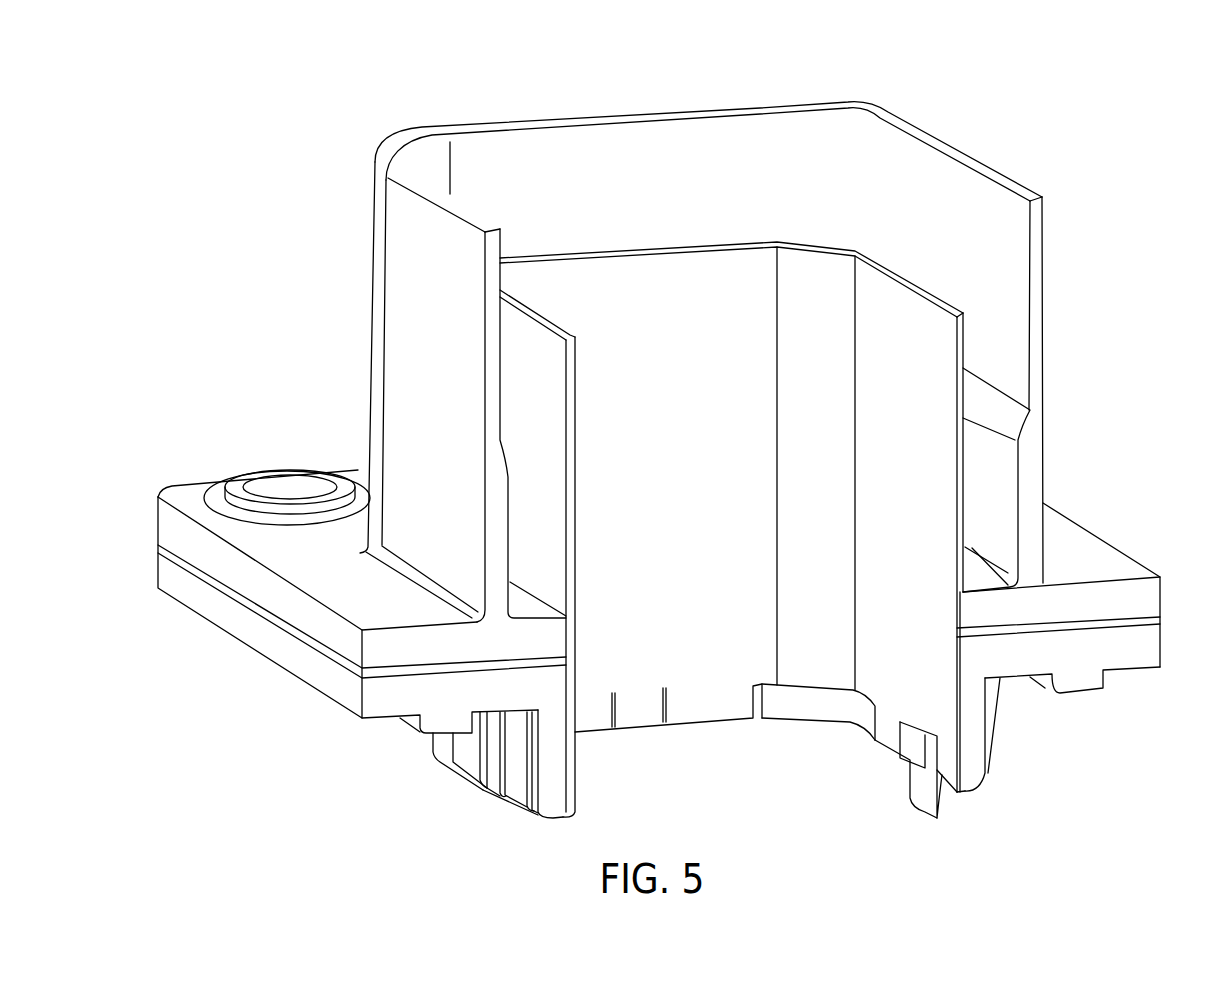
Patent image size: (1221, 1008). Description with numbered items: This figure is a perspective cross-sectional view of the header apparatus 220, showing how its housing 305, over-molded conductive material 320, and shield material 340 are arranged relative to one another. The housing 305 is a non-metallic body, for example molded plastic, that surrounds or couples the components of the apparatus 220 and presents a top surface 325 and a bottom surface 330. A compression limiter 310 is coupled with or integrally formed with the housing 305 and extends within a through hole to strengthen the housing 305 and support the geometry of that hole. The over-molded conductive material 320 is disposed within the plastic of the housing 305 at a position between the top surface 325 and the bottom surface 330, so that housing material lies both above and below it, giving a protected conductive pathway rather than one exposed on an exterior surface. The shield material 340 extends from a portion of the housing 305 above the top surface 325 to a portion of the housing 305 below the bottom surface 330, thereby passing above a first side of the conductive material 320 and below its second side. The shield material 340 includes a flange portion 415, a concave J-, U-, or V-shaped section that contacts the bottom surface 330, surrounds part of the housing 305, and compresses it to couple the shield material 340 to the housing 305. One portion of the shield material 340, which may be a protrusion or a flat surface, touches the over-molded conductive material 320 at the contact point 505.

The header apparatus 220 is at (187, 130).
The housing 305 is at (541, 110).
The shield material 340 is at (814, 236).
The bottom surface 330 is at (377, 724).
The compression limiter 310 is at (240, 486).
The flange portion 415 is at (516, 811).
The top surface 325 is at (1070, 560).
The over-molded conductive material 320 is at (1145, 628).
The contact point 505 is at (957, 632).